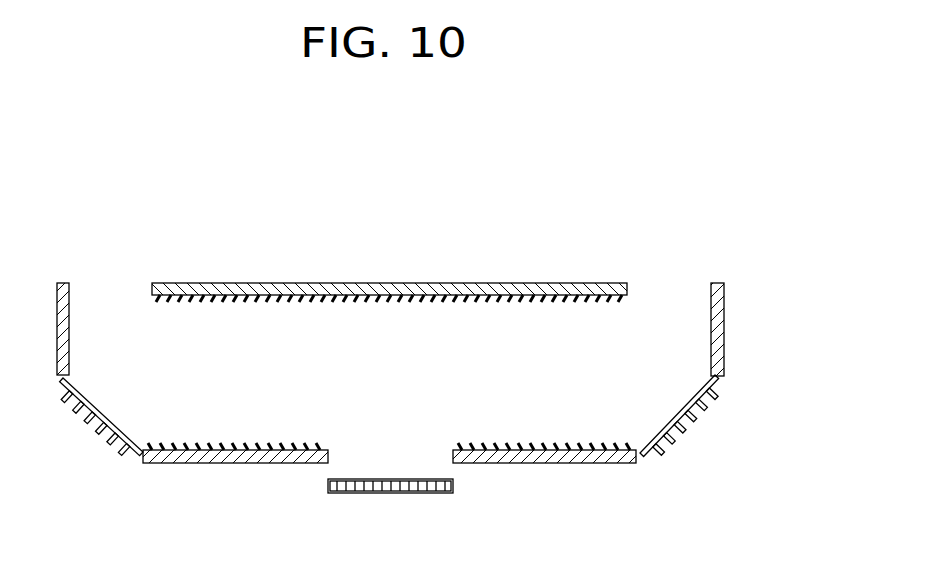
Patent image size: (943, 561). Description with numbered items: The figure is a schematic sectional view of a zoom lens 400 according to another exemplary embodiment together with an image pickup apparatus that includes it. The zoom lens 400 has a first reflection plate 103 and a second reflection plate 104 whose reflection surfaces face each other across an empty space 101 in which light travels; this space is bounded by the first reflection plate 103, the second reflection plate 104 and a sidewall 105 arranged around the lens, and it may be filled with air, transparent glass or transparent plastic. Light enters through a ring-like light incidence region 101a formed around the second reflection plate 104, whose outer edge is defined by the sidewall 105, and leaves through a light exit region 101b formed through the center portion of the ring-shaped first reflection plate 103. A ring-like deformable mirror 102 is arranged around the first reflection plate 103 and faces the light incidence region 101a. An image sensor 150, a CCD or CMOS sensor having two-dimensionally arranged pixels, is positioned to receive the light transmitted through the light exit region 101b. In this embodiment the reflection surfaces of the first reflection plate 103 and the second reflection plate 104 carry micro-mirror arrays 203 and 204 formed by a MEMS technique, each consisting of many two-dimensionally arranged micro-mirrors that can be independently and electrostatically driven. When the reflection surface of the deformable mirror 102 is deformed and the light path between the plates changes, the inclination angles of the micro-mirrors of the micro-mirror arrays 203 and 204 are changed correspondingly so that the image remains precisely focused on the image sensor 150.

The zoom lens 400 is at (740, 202).
The empty space 101 is at (410, 361).
The light incidence region 101a is at (643, 290).
The light exit region 101b is at (353, 455).
The deformable mirror 102 is at (685, 433).
The first reflection plate 103 is at (543, 464).
The second reflection plate 104 is at (394, 291).
The sidewall 105 is at (722, 323).
The image sensor 150 is at (392, 488).
The micro-mirror array 203 is at (605, 445).
The micro-mirror array 204 is at (510, 302).